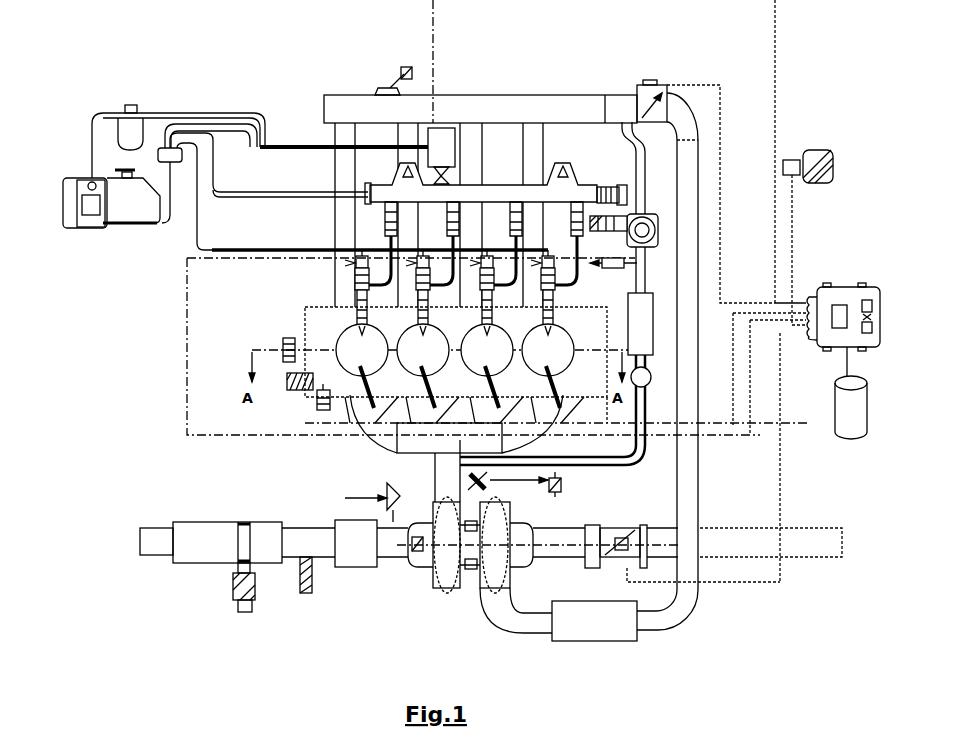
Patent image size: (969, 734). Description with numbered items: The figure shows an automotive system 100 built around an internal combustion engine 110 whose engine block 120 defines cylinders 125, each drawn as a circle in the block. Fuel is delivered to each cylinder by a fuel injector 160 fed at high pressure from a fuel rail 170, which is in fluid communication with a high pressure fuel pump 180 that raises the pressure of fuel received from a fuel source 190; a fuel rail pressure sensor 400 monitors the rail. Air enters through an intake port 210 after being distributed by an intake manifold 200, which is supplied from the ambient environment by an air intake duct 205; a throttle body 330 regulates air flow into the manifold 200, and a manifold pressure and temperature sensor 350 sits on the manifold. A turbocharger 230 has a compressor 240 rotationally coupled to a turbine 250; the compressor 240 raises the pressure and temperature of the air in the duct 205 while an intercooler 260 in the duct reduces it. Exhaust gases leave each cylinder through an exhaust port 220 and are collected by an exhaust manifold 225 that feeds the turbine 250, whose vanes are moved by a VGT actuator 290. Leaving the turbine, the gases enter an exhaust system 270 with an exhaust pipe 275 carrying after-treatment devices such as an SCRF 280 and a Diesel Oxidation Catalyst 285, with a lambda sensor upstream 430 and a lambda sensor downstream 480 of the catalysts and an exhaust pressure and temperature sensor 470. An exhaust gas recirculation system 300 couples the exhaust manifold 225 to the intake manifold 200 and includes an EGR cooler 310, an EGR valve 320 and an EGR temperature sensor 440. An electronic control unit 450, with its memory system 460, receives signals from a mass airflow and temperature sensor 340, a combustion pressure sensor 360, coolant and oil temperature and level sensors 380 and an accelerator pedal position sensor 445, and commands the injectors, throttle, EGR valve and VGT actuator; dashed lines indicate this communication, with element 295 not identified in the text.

The automotive system 100 is at (243, 77).
The internal combustion engine 110 is at (557, 82).
The engine block 120 is at (305, 308).
The cylinder 125 is at (565, 333).
The fuel injector 160 is at (348, 287).
The fuel rail 170 is at (368, 193).
The high pressure fuel pump 180 is at (445, 152).
The fuel source 190 is at (135, 215).
The intake manifold 200 is at (505, 110).
The air intake duct 205 is at (807, 550).
The intake port 210 is at (342, 308).
The exhaust port 220 is at (350, 397).
The exhaust manifold 225 is at (423, 447).
The turbocharger 230 is at (532, 576).
The compressor 240 is at (500, 568).
The turbine 250 is at (443, 575).
The intercooler 260 is at (618, 625).
The exhaust system 270 is at (210, 510).
The exhaust pipe 275 is at (150, 545).
The SCRF 280 is at (355, 548).
The Diesel Oxidation Catalyst 285 is at (262, 530).
The VGT actuator 290 is at (487, 480).
The intake duct 295 is at (195, 545).
The exhaust gas recirculation system 300 is at (613, 470).
The EGR cooler 310 is at (643, 340).
The EGR valve 320 is at (645, 210).
The throttle body 330 is at (650, 80).
The mass airflow and temperature sensor 340 is at (615, 568).
The manifold pressure and temperature sensor 350 is at (385, 80).
The combustion pressure sensor 360 is at (355, 415).
The coolant and oil temperature and level sensors 380 is at (312, 400).
The fuel rail pressure sensor 400 is at (627, 197).
The lambda sensor upstream 430 is at (343, 502).
The EGR temperature sensor 440 is at (637, 267).
The accelerator pedal position sensor 445 is at (818, 148).
The electronic control unit 450 is at (848, 286).
The memory system 460 is at (850, 420).
The exhaust pressure sensor and exhaust temperature sensor 470 is at (242, 612).
The lambda sensor downstream 480 is at (303, 600).